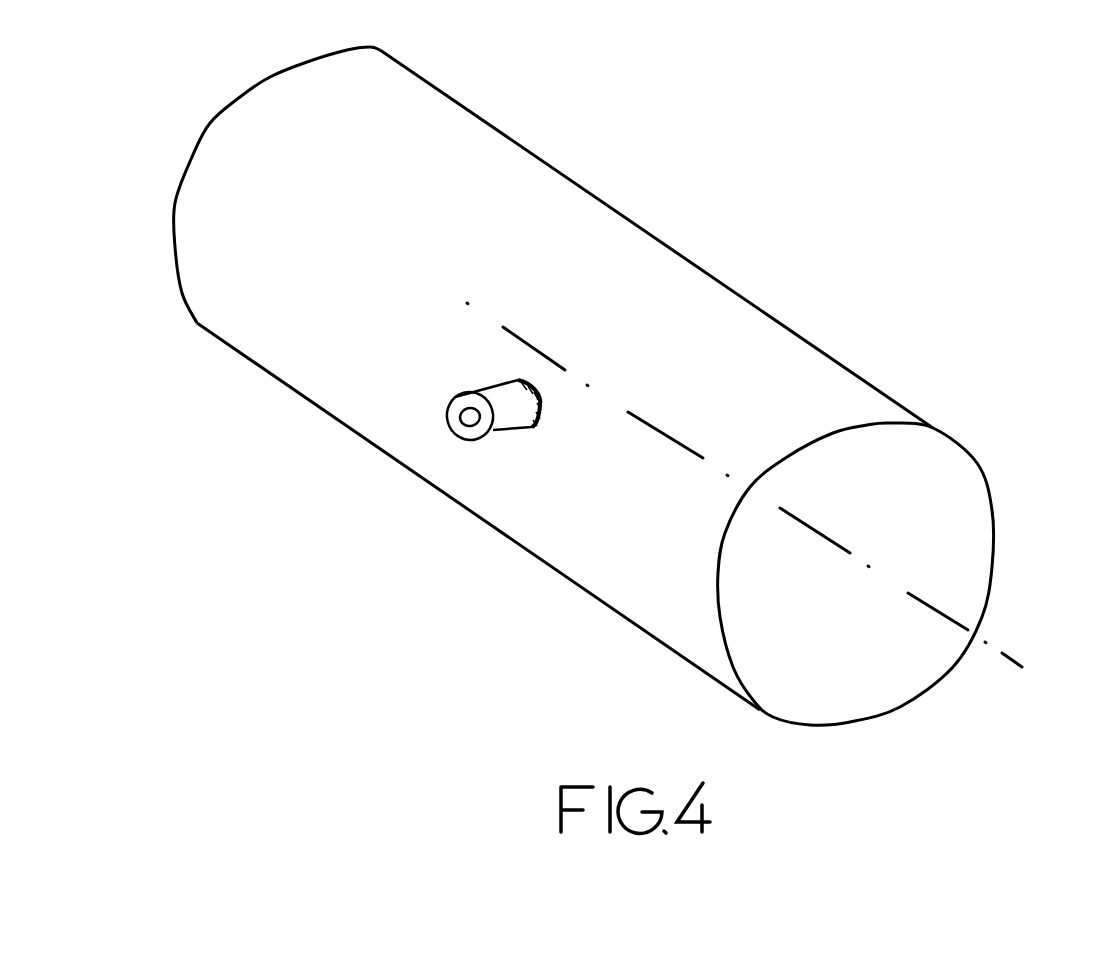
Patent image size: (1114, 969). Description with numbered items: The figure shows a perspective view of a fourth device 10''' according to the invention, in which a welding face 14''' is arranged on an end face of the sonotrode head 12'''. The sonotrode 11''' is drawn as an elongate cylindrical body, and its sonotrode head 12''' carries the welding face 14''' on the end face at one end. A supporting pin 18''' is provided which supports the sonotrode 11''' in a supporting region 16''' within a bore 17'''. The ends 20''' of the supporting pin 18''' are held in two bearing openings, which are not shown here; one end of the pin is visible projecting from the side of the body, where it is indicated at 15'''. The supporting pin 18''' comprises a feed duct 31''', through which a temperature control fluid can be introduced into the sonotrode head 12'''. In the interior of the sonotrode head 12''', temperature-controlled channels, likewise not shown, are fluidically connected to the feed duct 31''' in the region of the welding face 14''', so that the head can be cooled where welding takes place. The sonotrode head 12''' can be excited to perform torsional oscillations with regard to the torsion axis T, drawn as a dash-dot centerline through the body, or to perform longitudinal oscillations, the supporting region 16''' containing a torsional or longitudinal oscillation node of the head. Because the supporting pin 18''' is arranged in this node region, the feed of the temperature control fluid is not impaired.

The tube assembly 10''' is at (619, 364).
The sonotrode 11''' is at (553, 357).
The sonotrode head 12''' is at (656, 239).
The welding face 14''' is at (900, 574).
The port opening 15''' is at (367, 521).
The supporting region 16''' is at (758, 442).
The bore 17''' is at (551, 533).
The supporting pin 18''' is at (443, 533).
The ends of the supporting pin 20''' is at (400, 529).
The feed duct 31''' is at (392, 481).
The torsion axis T is at (758, 485).